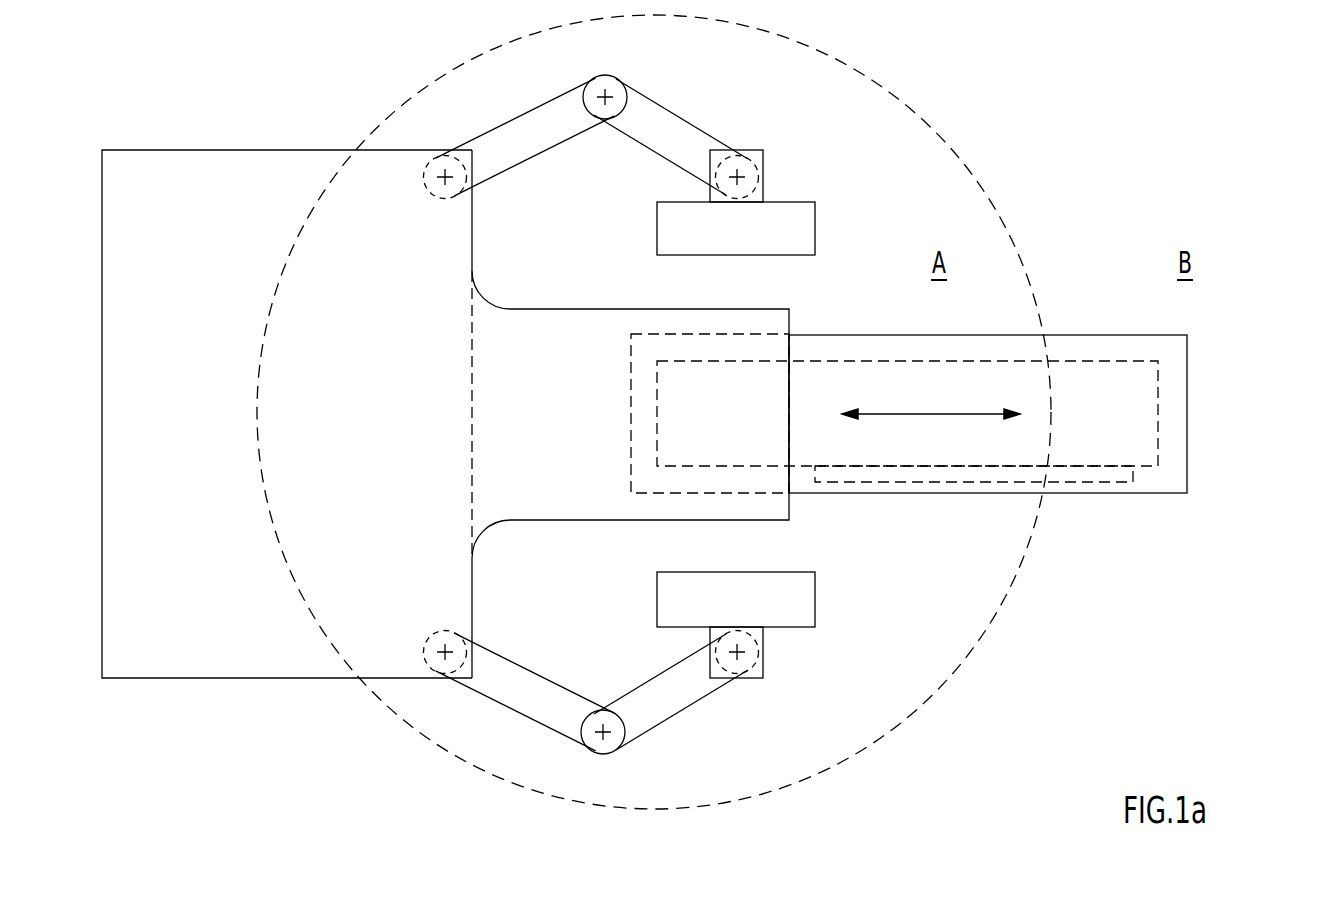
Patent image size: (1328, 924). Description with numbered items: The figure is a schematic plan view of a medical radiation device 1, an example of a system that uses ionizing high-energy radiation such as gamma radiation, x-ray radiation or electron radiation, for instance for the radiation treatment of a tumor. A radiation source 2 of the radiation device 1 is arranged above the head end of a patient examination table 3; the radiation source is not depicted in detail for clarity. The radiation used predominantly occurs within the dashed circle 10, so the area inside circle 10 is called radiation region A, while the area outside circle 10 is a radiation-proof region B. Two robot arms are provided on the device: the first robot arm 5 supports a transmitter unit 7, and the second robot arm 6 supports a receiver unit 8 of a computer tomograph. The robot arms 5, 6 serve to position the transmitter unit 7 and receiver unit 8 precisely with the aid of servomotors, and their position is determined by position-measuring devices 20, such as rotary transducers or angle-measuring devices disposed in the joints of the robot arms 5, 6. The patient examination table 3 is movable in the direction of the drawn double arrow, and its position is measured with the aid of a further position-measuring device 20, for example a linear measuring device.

The medical radiation device 1 is at (1315, 63).
The radiation source 2 is at (705, 309).
The patient examination table 3 is at (1172, 495).
The first robot arm 5 is at (518, 720).
The second robot arm 6 is at (523, 110).
The transmitter unit 7 is at (817, 598).
The receiver unit 8 is at (817, 228).
The circle 10 is at (965, 164).
The position-measuring device 20 is at (449, 180).